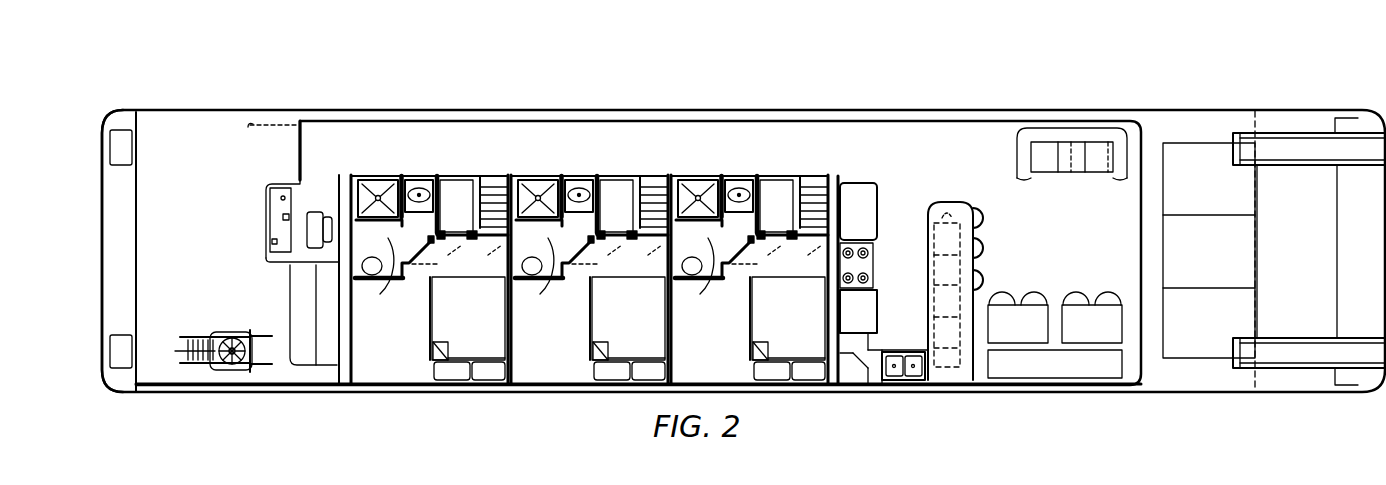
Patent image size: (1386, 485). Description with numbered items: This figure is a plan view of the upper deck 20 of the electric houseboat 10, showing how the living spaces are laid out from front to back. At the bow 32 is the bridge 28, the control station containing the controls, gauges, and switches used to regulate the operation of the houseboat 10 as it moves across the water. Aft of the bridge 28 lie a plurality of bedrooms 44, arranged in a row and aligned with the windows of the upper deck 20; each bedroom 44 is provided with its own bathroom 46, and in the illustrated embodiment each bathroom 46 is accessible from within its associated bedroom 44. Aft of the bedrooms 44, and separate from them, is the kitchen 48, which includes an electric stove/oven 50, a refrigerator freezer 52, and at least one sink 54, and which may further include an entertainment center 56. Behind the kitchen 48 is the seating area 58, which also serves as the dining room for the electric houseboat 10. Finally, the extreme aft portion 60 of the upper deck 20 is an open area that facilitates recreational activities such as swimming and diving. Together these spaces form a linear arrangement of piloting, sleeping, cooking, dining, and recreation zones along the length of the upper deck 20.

The electric houseboat 10 is at (577, 90).
The upper deck 20 is at (963, 176).
The bridge 28 is at (298, 199).
The bow 32 is at (98, 223).
The bedrooms 44 is at (406, 366).
The bathroom 46 is at (557, 254).
The kitchen 48 is at (915, 244).
The electric stove/oven 50 is at (876, 266).
The refrigerator freezer 52 is at (878, 313).
The sink 54 is at (914, 383).
The entertainment center 56 is at (878, 201).
The seating area 58 is at (1066, 241).
The extreme aft portion 60 is at (1305, 267).